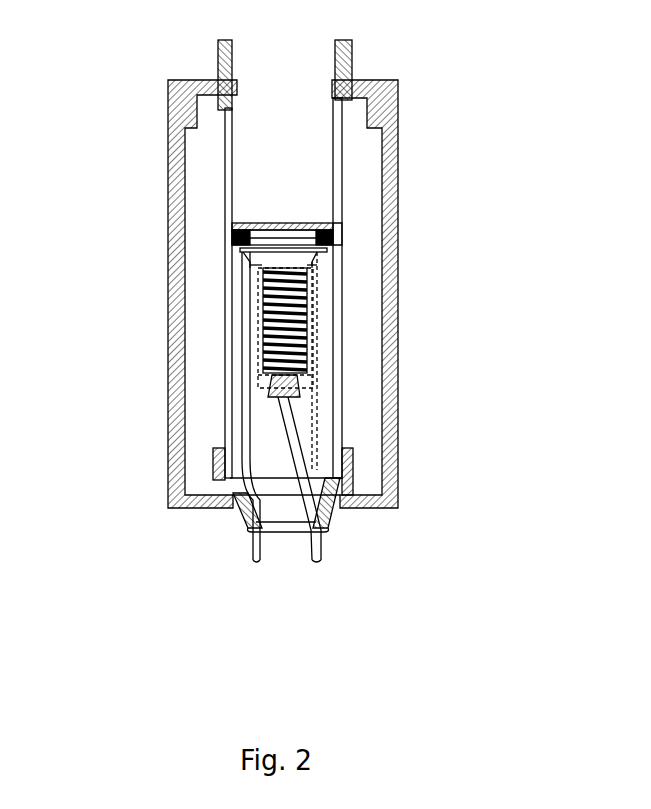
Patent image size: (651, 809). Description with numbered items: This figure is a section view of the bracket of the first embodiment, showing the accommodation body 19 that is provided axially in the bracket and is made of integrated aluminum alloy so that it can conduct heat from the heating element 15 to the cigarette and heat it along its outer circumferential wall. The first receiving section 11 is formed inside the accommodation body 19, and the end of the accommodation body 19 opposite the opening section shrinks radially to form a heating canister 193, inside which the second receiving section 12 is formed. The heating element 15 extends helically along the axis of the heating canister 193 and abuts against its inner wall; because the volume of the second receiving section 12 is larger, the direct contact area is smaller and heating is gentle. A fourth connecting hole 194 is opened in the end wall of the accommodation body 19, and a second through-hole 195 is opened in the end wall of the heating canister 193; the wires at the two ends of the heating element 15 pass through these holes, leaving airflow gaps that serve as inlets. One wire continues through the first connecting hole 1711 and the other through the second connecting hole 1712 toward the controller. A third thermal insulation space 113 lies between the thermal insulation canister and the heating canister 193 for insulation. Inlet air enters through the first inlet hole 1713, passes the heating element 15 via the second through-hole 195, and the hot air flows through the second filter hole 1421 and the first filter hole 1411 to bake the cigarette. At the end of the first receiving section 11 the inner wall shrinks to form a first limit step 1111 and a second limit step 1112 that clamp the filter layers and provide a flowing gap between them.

The first receiving section 11 is at (300, 112).
The accommodation body 19 is at (338, 163).
The first filter hole 1411 is at (257, 219).
The second filter hole 1421 is at (238, 232).
The first limit step 1111 is at (340, 230).
The second limit step 1112 is at (342, 242).
The fourth connecting hole 194 is at (245, 255).
The second receiving section 12 is at (313, 270).
The heating canister 193 is at (313, 328).
The heating element 15 is at (307, 295).
The second through-hole 195 is at (268, 388).
The third thermal insulation space 113 is at (318, 422).
The first connecting hole 1711 is at (252, 530).
The second connecting hole 1712 is at (320, 532).
The first inlet hole 1713 is at (288, 528).